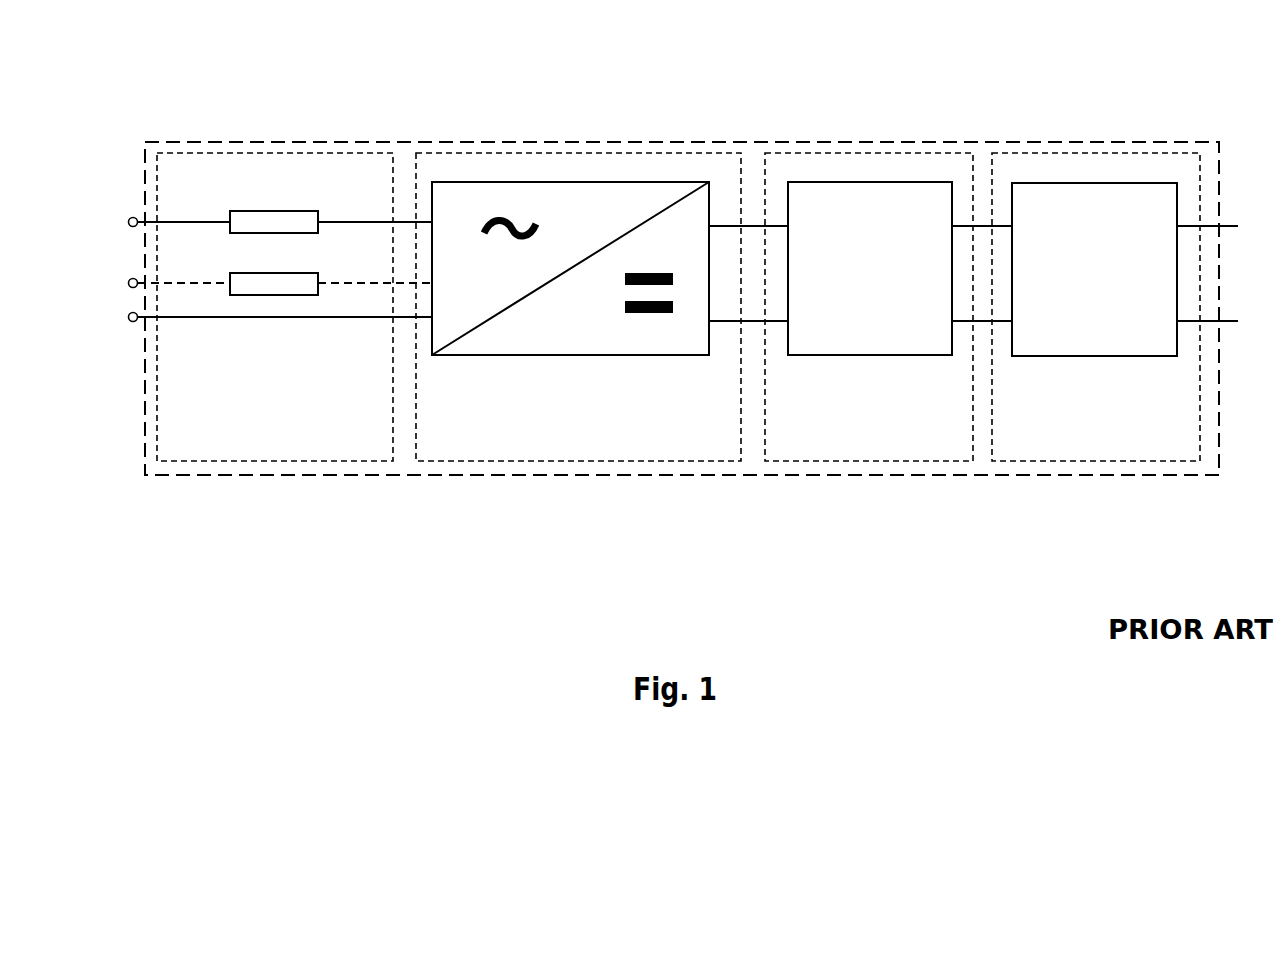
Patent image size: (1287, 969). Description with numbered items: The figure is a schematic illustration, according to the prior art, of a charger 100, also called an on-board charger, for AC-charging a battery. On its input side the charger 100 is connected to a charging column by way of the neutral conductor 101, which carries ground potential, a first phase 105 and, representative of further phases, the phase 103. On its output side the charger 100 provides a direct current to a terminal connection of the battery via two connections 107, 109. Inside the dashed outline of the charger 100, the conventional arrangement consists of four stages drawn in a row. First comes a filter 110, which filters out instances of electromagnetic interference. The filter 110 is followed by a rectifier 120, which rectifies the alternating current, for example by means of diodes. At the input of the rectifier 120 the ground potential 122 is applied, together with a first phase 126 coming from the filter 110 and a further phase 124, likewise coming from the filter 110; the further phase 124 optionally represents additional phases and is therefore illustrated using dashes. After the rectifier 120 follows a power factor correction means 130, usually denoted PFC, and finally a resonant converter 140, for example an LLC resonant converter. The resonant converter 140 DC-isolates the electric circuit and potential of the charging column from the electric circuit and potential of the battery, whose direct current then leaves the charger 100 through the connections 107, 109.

The charger 100 is at (989, 141).
The neutral conductor 101 is at (131, 323).
The phase 103 is at (131, 278).
The first phase 105 is at (131, 217).
The connection 107 is at (1238, 330).
The connection 109 is at (1238, 217).
The filter 110 is at (242, 420).
The rectifier 120 is at (545, 420).
The ground potential 122 is at (430, 321).
The further phase 124 is at (430, 280).
The first phase 126 is at (430, 212).
The power factor correction means 130 is at (873, 420).
The resonant converter 140 is at (1093, 420).